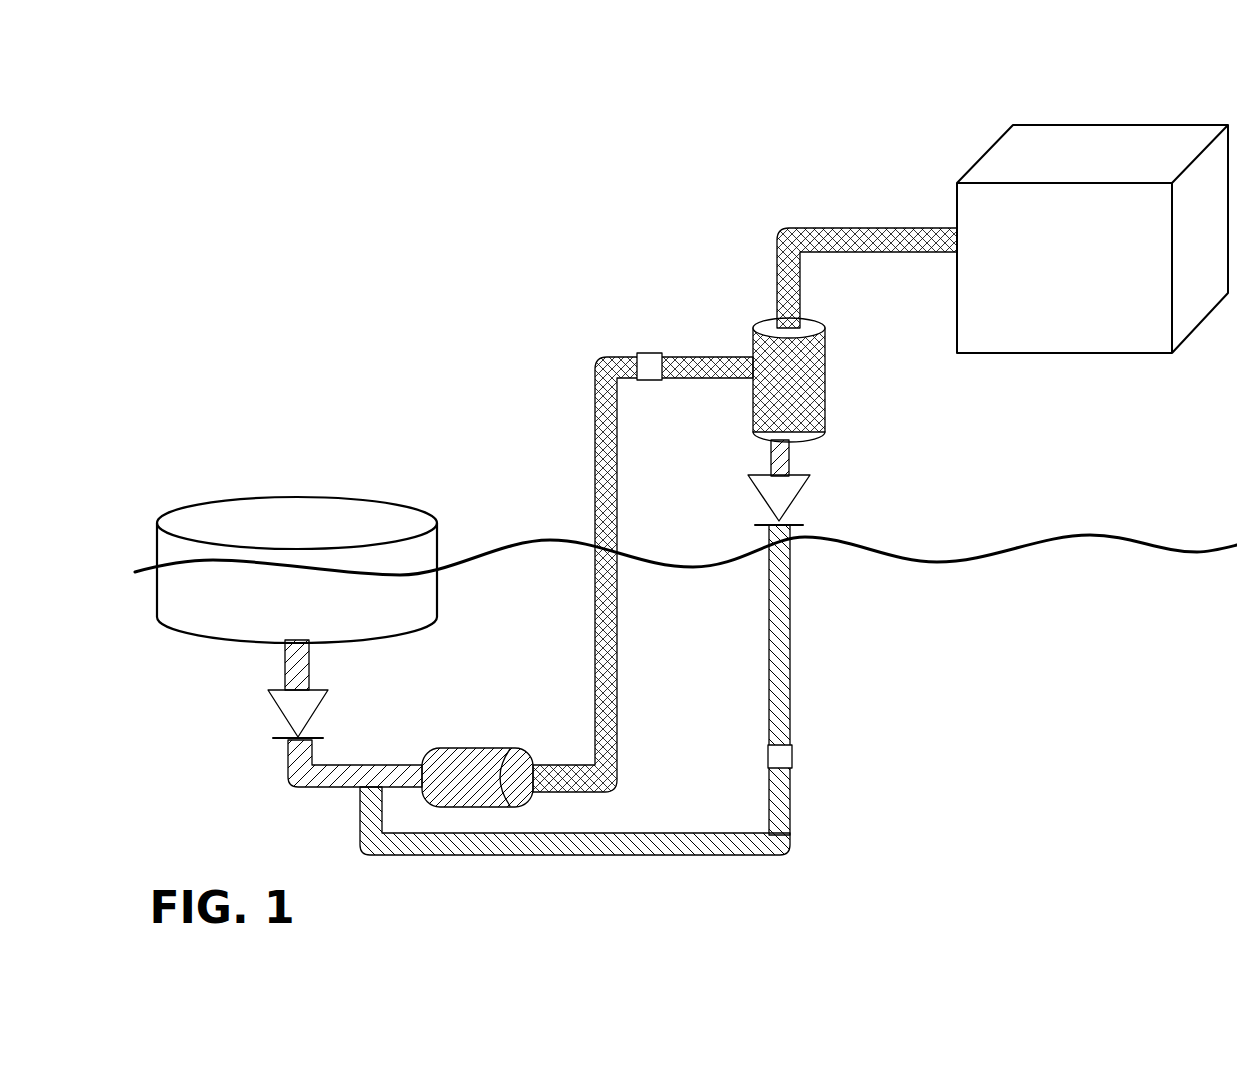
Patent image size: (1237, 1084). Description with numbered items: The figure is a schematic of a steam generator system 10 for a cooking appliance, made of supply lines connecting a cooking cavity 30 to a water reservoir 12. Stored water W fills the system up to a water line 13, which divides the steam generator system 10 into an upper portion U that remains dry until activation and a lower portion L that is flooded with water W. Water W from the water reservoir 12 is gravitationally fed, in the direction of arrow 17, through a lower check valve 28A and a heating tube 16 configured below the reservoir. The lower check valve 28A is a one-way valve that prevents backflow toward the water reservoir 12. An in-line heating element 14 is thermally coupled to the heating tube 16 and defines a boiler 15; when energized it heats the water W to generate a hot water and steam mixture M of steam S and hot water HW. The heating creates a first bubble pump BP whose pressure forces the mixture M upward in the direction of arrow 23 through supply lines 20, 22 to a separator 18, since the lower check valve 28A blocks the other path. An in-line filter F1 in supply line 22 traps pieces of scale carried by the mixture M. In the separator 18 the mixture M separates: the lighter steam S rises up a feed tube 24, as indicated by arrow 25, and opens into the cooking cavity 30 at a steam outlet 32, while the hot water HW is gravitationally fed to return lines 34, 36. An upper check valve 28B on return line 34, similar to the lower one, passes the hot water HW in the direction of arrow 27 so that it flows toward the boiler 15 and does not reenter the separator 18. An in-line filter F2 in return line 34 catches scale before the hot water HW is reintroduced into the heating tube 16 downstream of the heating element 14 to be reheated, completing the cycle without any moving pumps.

The steam generator system 10 is at (448, 360).
The water reservoir 12 is at (210, 497).
The water W is at (318, 525).
The water line 13 is at (488, 548).
The upper portion U is at (542, 546).
The lower portion L is at (542, 546).
The arrow 17 is at (343, 640).
The lower check valve 28A is at (282, 705).
The heating tube 16 is at (315, 790).
The in-line heating element 14 is at (440, 748).
The boiler 15 is at (511, 744).
The supply line 20 is at (595, 457).
The supply line 22 is at (672, 385).
The in-line filter F1 is at (648, 352).
The hot water HW is at (607, 497).
The steam S is at (612, 617).
The hot water and steam mixture M is at (698, 632).
The first bubble pump BP is at (610, 727).
The arrow 23 is at (648, 658).
The separator 18 is at (825, 413).
The feed tube 24 is at (848, 232).
The arrow 25 is at (827, 275).
The steam outlet 32 is at (953, 228).
The cooking cavity 30 is at (1080, 150).
The arrow 27 is at (833, 462).
The upper check valve 28B is at (802, 497).
The return line 34 is at (790, 722).
The in-line filter F2 is at (792, 757).
The return line 36 is at (520, 857).